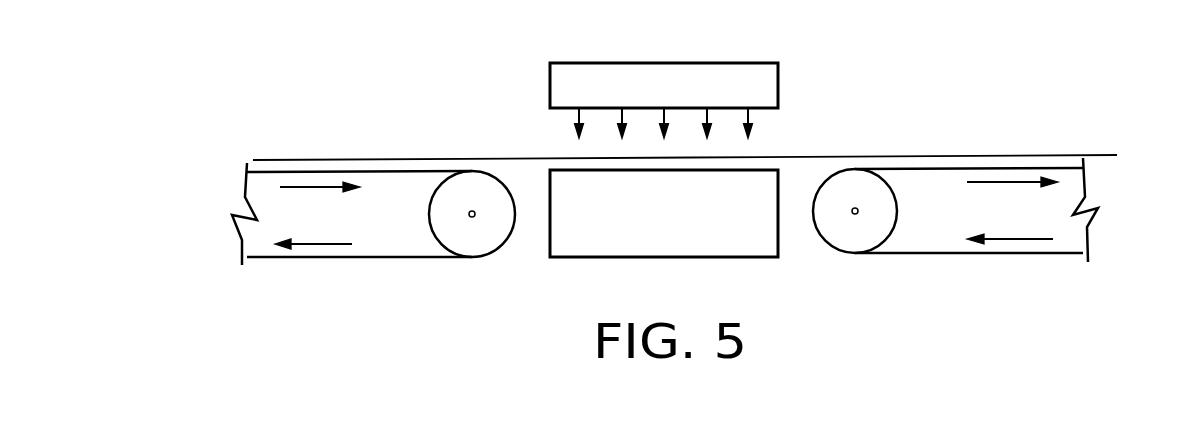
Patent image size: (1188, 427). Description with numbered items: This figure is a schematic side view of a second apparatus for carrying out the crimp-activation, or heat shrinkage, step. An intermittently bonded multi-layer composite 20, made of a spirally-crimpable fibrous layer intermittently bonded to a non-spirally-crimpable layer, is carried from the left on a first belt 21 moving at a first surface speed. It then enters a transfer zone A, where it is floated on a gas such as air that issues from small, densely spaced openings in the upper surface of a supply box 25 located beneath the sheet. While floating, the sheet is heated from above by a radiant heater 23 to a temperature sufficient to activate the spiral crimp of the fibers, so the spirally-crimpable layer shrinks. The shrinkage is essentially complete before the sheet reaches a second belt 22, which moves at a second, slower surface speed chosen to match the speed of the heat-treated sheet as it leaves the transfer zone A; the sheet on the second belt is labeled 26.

The intermittently bonded multi-layer composite 20 is at (366, 144).
The first belt 21 is at (339, 262).
The second belt 22 is at (955, 253).
The radiant heater 23 is at (655, 63).
The supply box 25 is at (653, 258).
The processed web 26 is at (964, 128).
The transfer zone A is at (548, 146).